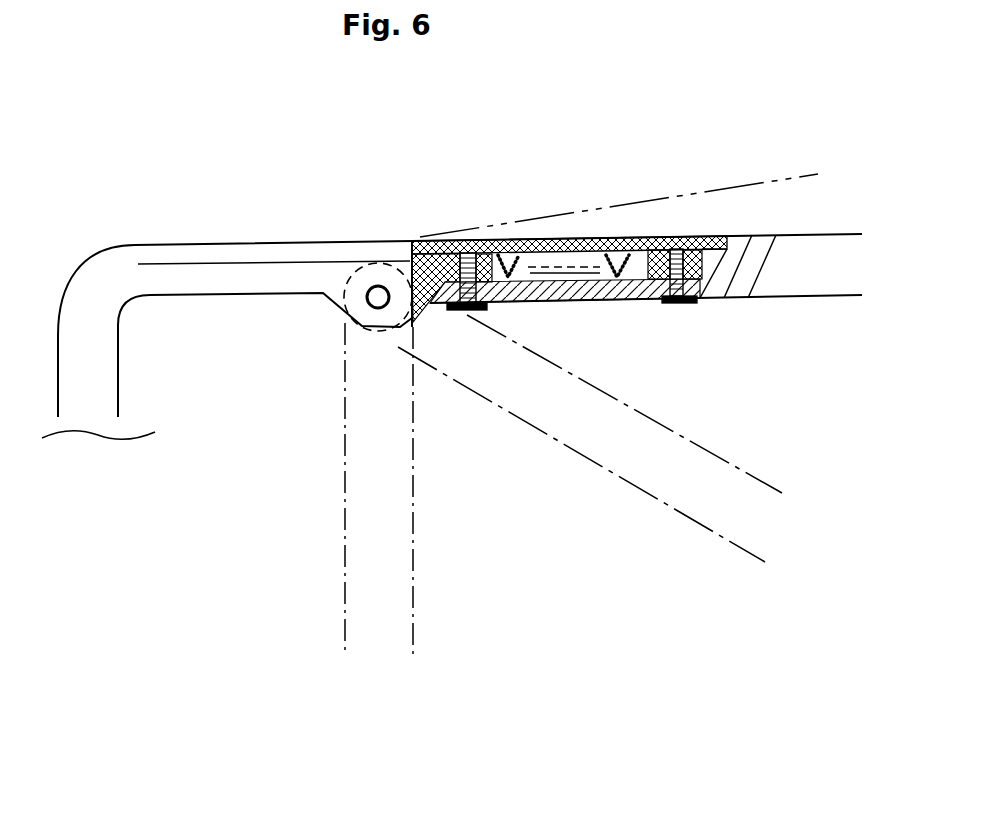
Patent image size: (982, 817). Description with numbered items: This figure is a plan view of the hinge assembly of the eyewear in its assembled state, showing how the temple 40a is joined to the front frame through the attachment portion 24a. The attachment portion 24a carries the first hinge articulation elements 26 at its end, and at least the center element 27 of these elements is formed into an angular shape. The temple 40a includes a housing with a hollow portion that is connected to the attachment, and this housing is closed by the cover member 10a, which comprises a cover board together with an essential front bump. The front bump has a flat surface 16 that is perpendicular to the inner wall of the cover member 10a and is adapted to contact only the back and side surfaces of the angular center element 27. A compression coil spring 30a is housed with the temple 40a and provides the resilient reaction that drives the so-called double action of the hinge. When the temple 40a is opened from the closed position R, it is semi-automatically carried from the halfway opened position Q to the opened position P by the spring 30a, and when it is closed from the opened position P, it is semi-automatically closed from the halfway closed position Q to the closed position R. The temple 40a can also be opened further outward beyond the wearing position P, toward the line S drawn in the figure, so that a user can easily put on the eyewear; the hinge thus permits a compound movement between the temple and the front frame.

The attachment portion 24a is at (120, 247).
The first hinge articulation elements 26 is at (410, 273).
The center element 27 is at (410, 263).
The flat surface 16 is at (421, 240).
The cover member 10a is at (562, 238).
The compression coil spring 30a is at (575, 267).
The temple 40a is at (782, 275).
The plane S is at (635, 205).
The opened position P is at (845, 265).
The halfway position Q is at (590, 438).
The closed position R is at (379, 490).